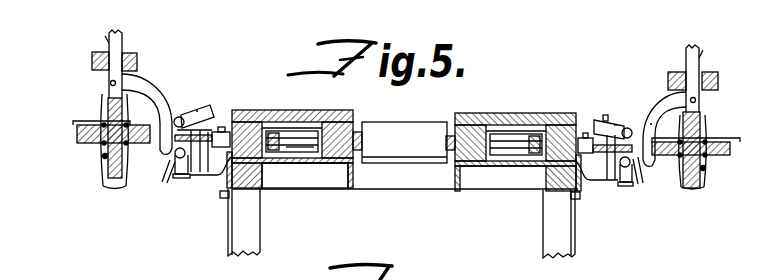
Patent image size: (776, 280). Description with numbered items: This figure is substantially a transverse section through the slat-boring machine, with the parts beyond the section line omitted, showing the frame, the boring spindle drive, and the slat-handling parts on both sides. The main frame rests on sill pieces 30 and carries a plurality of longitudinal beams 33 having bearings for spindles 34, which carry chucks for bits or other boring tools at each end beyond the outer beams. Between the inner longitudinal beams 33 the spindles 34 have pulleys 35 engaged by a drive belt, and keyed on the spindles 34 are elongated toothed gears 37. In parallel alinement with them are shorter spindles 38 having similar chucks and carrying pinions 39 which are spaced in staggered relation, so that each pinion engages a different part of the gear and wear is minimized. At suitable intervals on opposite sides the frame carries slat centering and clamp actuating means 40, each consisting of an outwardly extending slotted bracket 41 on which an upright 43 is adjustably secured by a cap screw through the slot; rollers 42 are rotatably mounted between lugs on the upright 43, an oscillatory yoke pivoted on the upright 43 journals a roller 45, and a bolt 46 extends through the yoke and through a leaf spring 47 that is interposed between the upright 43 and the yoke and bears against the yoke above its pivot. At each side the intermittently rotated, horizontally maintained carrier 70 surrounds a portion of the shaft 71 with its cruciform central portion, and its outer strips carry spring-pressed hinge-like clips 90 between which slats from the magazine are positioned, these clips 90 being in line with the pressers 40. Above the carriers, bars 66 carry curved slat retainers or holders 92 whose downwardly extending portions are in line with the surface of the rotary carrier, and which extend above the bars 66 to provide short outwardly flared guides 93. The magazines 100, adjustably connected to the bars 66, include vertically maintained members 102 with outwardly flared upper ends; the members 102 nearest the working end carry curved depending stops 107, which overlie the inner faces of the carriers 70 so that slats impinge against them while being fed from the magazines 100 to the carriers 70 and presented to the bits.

The sill pieces 30 is at (255, 222).
The longitudinal beams 33 is at (234, 109).
The spindles 34 is at (356, 131).
The pulleys 35 is at (402, 131).
The elongated toothed gears 37 is at (287, 131).
The shorter spindles 38 is at (296, 153).
The pinions 39 is at (276, 165).
The slat centering and clamp actuating means 40 is at (205, 108).
The bracket 41 is at (222, 190).
The rollers 42 is at (176, 176).
The upright 43 is at (616, 125).
The roller 45 is at (200, 107).
The bolt 46 is at (222, 110).
The leaf spring 47 is at (598, 118).
The bars 66 is at (92, 58).
The carrier 70 is at (104, 158).
The shaft 71 is at (78, 131).
The hinge-like clips 90 is at (116, 184).
The slat retainers or holders 92 is at (172, 118).
The outwardly flared guides 93 is at (108, 40).
The magazines 100 is at (687, 60).
The vertically maintained member 102 is at (120, 40).
The stops 107 is at (149, 86).